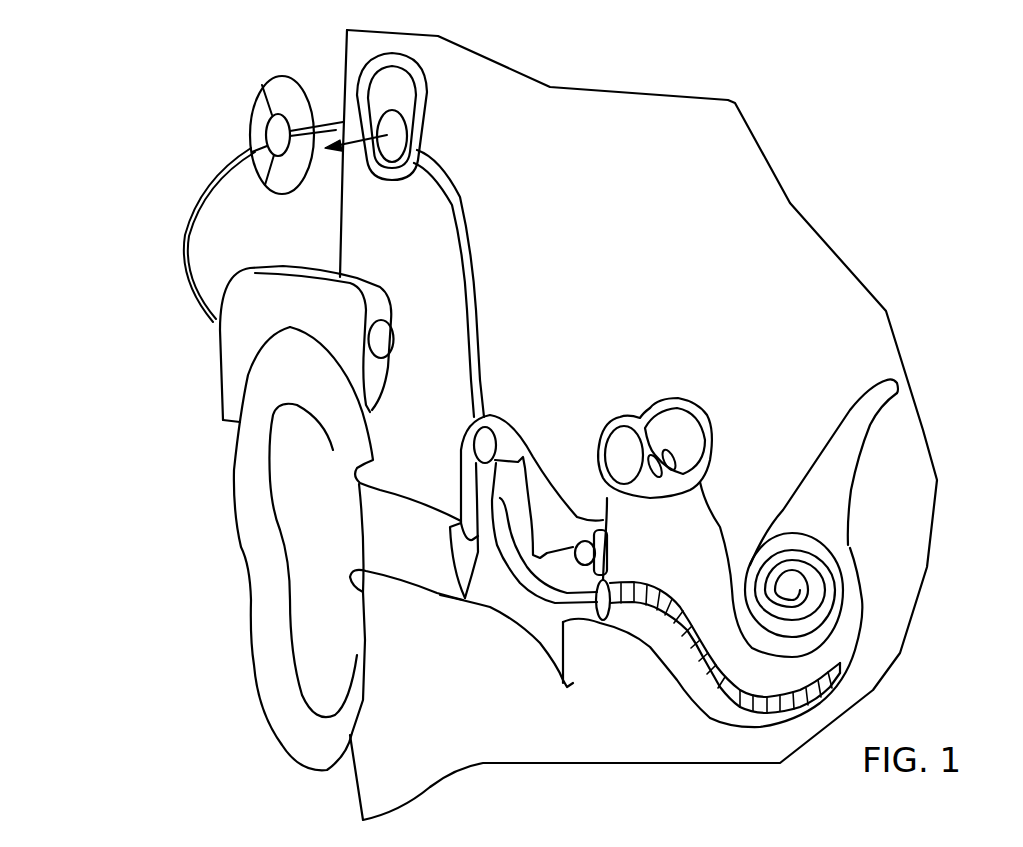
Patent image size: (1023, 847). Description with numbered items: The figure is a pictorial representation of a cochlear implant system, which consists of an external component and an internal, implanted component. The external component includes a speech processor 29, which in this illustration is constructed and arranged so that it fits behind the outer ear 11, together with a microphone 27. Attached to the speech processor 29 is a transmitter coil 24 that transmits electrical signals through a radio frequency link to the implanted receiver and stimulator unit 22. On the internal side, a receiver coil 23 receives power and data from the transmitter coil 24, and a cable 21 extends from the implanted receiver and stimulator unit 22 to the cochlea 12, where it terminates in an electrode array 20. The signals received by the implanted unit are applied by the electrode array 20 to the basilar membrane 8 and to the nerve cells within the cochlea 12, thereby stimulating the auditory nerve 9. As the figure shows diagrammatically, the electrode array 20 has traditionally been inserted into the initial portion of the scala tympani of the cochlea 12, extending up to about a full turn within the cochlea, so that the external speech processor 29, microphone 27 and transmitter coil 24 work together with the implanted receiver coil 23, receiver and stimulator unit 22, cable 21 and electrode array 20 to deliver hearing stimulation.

The basilar membrane 8 is at (660, 589).
The auditory nerve 9 is at (820, 467).
The outer ear 11 is at (273, 697).
The cochlea 12 is at (864, 667).
The electrode array 20 is at (720, 706).
The cable 21 is at (472, 287).
The implanted receiver and stimulator unit 22 is at (417, 151).
The receiver coil 23 is at (417, 98).
The transmitter coil 24 is at (250, 126).
The microphone 27 is at (392, 335).
The speech processor 29 is at (233, 375).